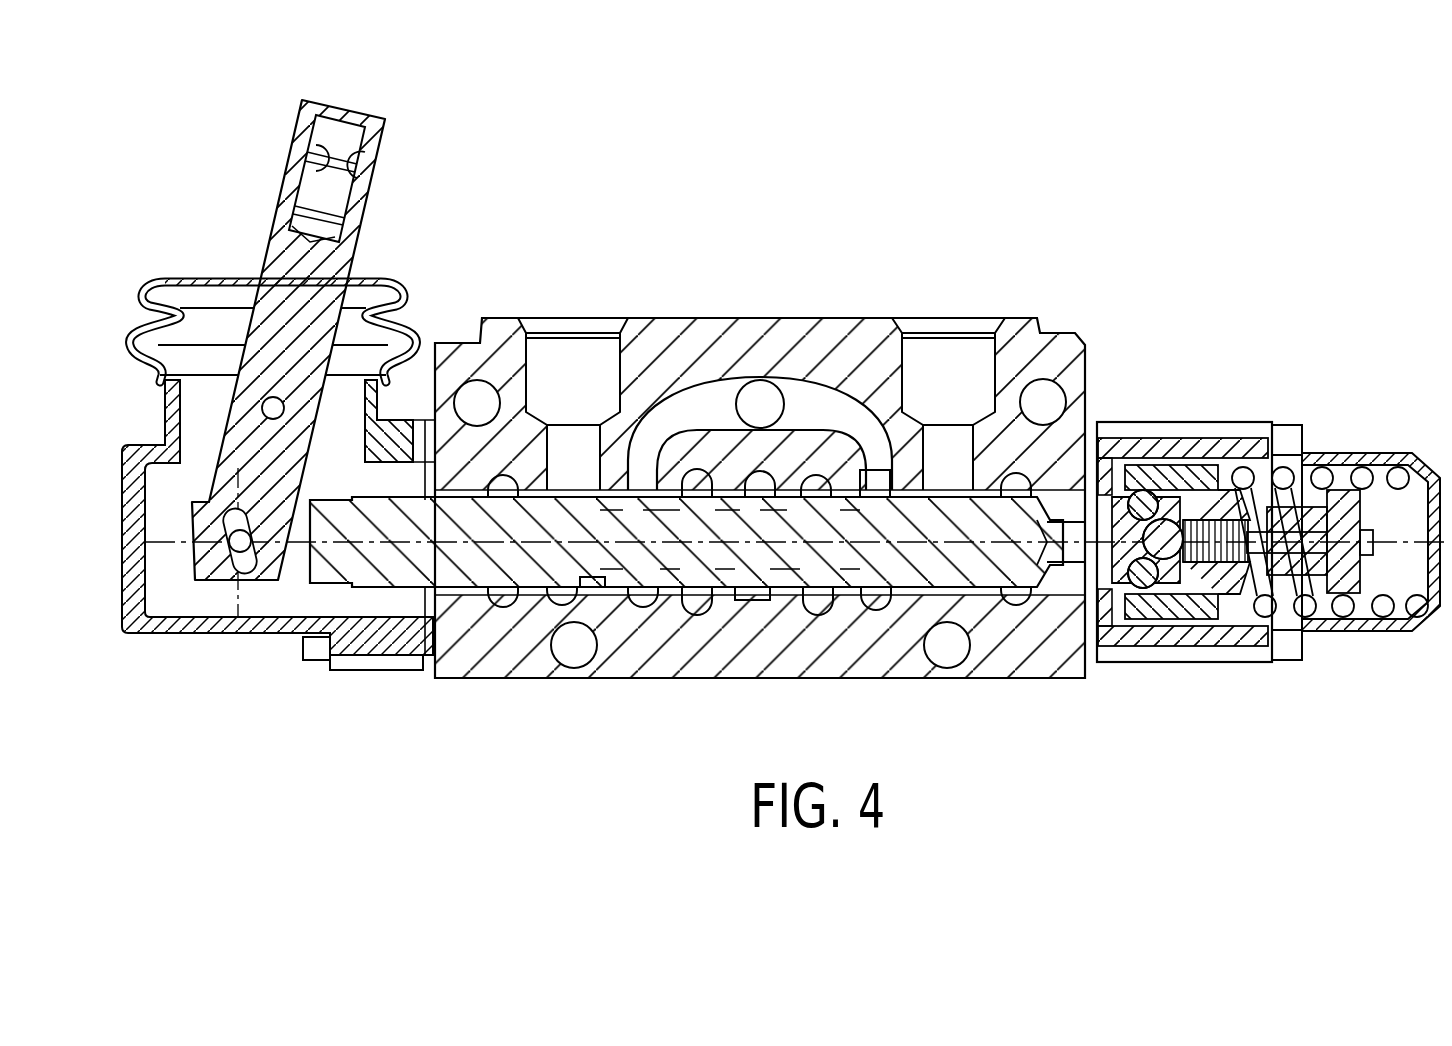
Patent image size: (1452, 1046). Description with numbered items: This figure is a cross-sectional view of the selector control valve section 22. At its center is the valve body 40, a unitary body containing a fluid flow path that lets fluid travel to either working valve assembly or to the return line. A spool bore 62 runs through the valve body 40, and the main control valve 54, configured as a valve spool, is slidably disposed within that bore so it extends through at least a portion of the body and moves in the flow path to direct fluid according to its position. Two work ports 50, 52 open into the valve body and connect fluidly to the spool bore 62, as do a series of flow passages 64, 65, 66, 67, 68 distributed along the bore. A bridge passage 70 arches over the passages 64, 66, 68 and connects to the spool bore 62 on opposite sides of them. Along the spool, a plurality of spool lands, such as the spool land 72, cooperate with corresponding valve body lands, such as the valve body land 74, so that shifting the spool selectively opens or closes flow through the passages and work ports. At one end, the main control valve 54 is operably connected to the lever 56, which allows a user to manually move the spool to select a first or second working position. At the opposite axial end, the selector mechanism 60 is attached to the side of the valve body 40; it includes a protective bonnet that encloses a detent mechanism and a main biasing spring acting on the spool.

The selector control valve section 22 is at (1120, 157).
The valve body 40 is at (1070, 338).
The work port 50 is at (606, 318).
The work port 52 is at (985, 318).
The main control valve 54 is at (980, 565).
The lever 56 is at (387, 119).
The selector mechanism 60 is at (1319, 345).
The spool bore 62 is at (895, 575).
The flow passage 64 is at (703, 603).
The flow passage 65 is at (500, 603).
The flow passage 66 is at (750, 603).
The flow passage 67 is at (1017, 600).
The flow passage 68 is at (830, 605).
The bridge passage 70 is at (822, 400).
The spool land 72 is at (592, 575).
The valve body land 74 is at (596, 590).